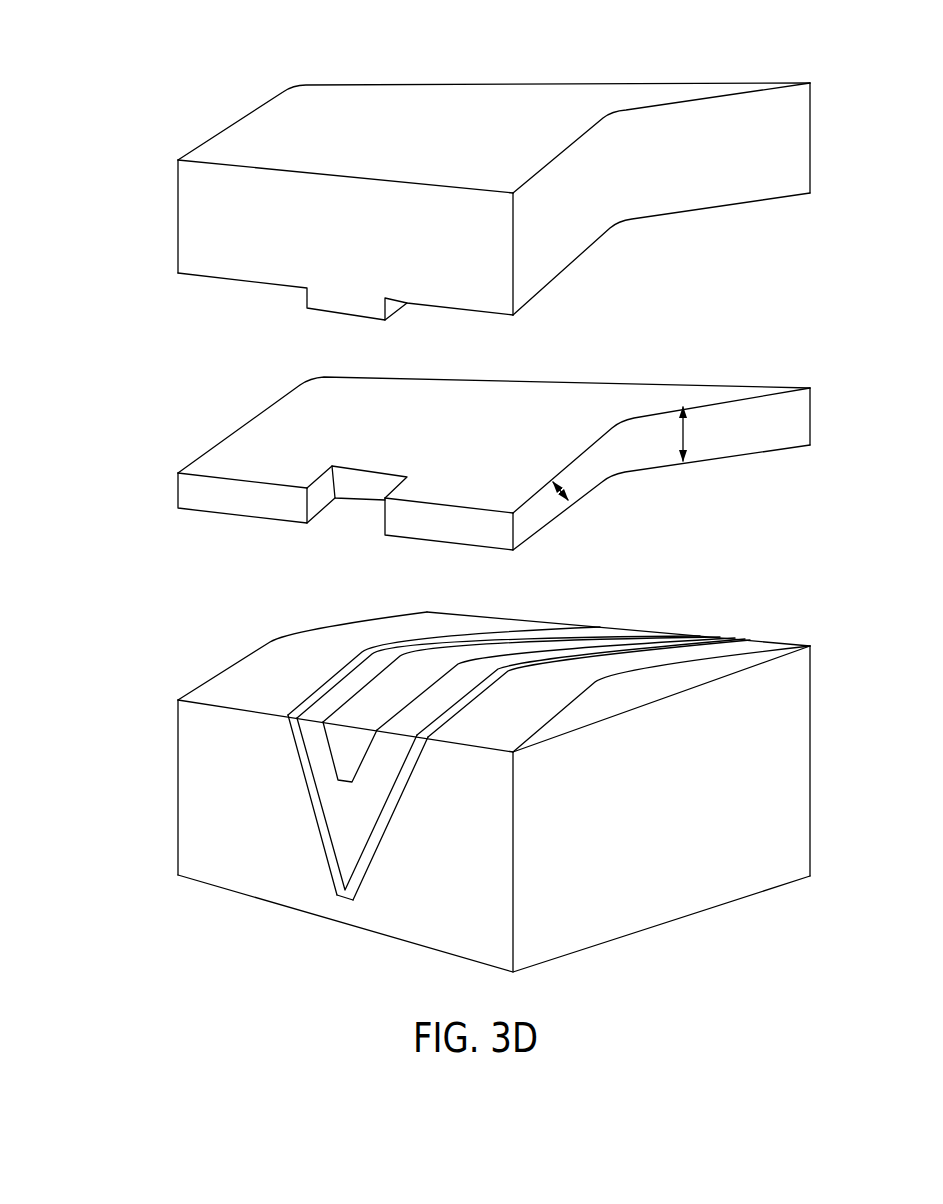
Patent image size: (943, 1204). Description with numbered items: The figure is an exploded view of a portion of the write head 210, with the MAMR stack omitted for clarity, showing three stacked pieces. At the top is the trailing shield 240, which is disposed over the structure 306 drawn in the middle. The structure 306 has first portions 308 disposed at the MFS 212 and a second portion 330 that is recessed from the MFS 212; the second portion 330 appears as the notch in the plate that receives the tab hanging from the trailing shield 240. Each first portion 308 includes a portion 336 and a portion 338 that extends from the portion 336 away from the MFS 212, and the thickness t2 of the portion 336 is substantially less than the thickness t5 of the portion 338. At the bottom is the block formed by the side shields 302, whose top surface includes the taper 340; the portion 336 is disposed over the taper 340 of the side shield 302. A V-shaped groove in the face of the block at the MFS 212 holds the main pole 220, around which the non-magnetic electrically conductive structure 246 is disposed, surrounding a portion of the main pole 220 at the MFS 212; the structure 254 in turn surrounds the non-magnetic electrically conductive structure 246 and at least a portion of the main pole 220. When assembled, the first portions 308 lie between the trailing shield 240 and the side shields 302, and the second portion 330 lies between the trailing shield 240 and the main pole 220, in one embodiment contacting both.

The write head 210 is at (150, 88).
The trailing shield 240 is at (636, 93).
The structure 306 is at (172, 425).
The first portions 308 is at (195, 490).
The second portion 330 is at (363, 488).
The portion 336 is at (528, 520).
The portion 338 is at (738, 435).
The thickness of portion 336 t2 is at (574, 492).
The thickness of portion 338 t5 is at (677, 438).
The MFS 212 is at (185, 783).
The side shield 302 is at (268, 811).
The taper 340 is at (208, 682).
The non-magnetic electrically conductive structure 246 is at (334, 826).
The main pole 220 is at (341, 745).
The structure 254 is at (334, 881).